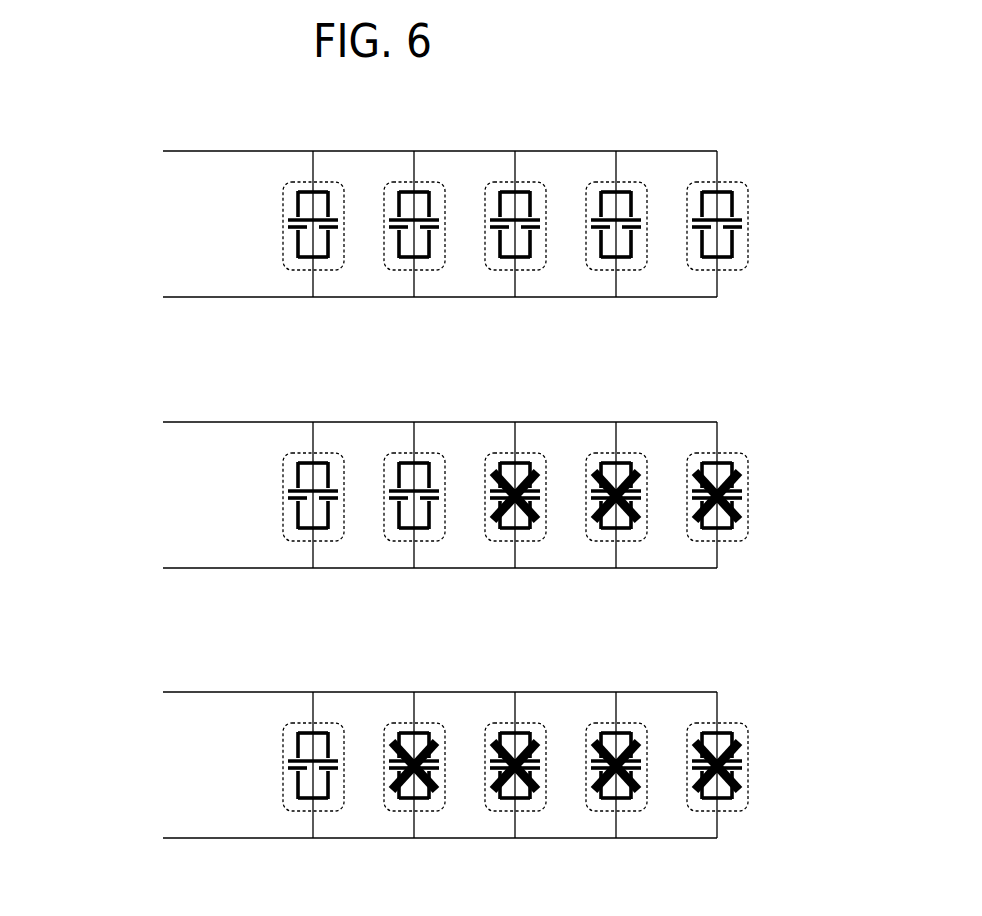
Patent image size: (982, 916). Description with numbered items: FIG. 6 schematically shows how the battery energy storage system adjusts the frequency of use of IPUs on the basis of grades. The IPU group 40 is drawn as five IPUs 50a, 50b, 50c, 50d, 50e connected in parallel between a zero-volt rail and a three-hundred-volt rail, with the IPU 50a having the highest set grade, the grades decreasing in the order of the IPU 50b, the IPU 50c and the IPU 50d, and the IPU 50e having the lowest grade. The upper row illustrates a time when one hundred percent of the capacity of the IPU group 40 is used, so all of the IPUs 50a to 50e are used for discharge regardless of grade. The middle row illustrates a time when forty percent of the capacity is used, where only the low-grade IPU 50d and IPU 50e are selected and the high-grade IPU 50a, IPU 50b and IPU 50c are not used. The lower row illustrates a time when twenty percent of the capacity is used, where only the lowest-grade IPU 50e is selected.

The IPU group 40 is at (436, 492).
The IPU 50e is at (322, 484).
The IPU 50d is at (423, 484).
The IPU 50c is at (524, 484).
The IPU 50b is at (625, 484).
The IPU 50a is at (726, 484).